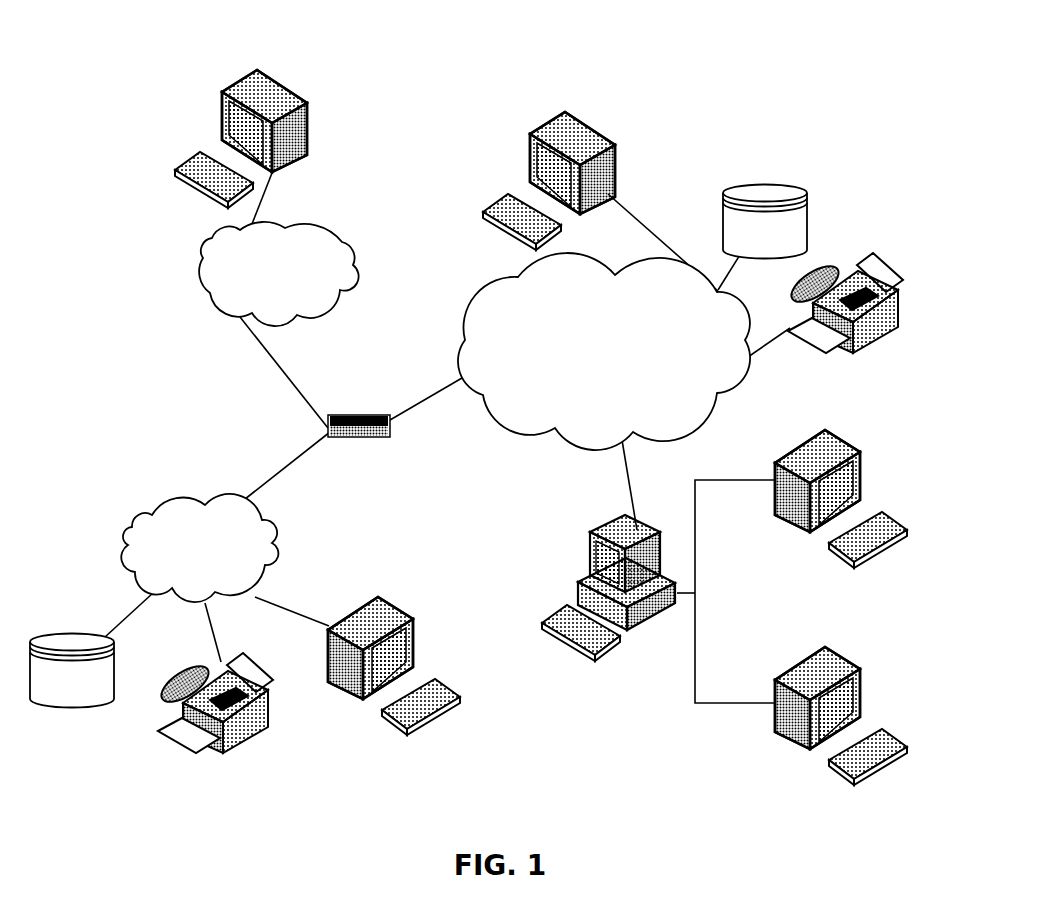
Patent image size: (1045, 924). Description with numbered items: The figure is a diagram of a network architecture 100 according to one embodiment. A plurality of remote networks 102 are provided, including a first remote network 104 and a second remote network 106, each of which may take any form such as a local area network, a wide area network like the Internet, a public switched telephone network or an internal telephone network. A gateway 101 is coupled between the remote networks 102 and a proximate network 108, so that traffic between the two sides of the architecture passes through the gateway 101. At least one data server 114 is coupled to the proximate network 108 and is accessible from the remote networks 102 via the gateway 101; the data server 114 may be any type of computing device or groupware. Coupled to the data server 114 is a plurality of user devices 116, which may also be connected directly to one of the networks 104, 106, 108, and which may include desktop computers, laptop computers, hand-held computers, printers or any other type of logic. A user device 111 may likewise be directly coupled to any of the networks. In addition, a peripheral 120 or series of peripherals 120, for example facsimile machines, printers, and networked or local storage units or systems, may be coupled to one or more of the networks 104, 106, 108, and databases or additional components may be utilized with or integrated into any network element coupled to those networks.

The architecture 100 is at (156, 54).
The gateway 101 is at (342, 413).
The remote networks 102 is at (184, 335).
The first remote network 104 is at (127, 525).
The second remote network 106 is at (352, 244).
The proximate network 108 is at (712, 413).
The user device 111 is at (620, 146).
The data server 114 is at (588, 546).
The user devices 116 is at (308, 113).
The peripheral 120 is at (807, 197).